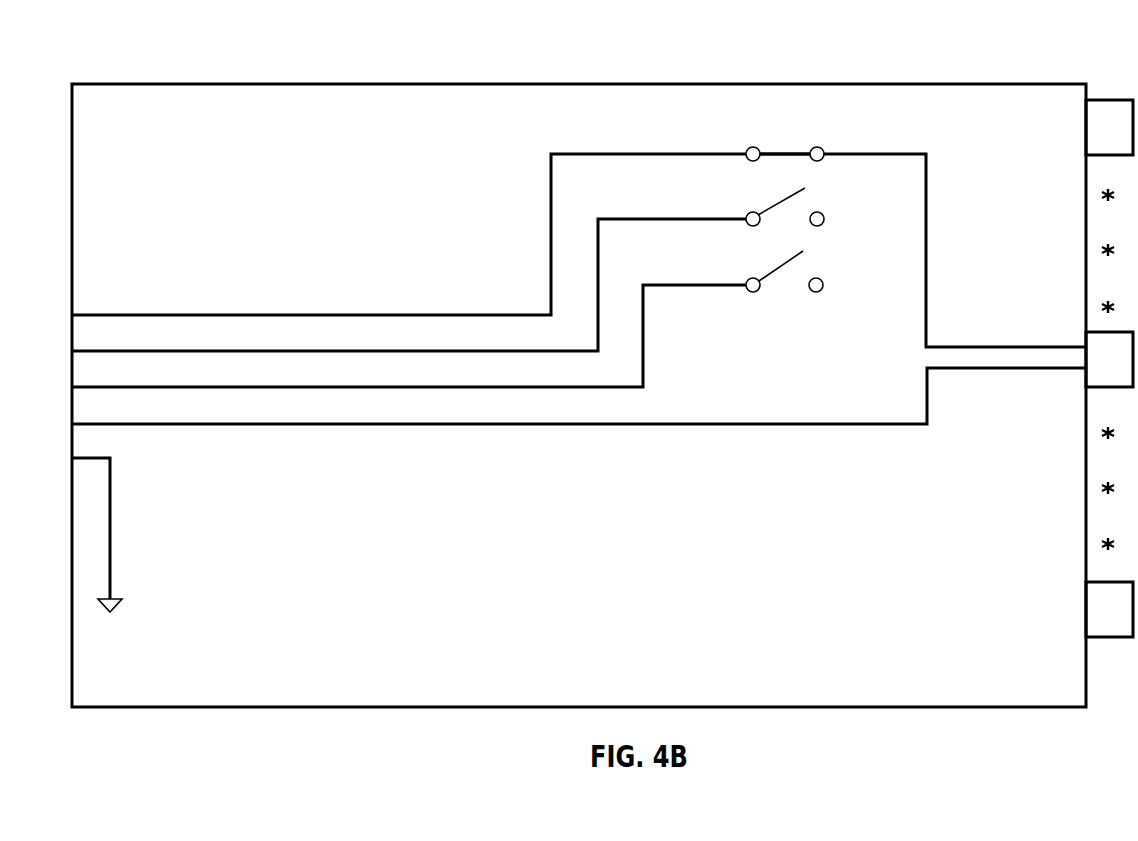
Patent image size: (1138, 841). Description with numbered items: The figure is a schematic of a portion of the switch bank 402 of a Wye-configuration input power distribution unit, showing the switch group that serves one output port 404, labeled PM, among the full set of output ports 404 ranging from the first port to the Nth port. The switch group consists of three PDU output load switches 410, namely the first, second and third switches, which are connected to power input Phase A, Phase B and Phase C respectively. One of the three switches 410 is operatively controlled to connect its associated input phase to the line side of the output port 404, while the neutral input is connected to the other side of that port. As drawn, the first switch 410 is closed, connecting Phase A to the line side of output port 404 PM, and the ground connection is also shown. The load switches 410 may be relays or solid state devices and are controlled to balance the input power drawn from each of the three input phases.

The switch bank 402 is at (760, 13).
The PDU output port 404 is at (1106, 83).
The PDU output load switch 410 is at (715, 113).